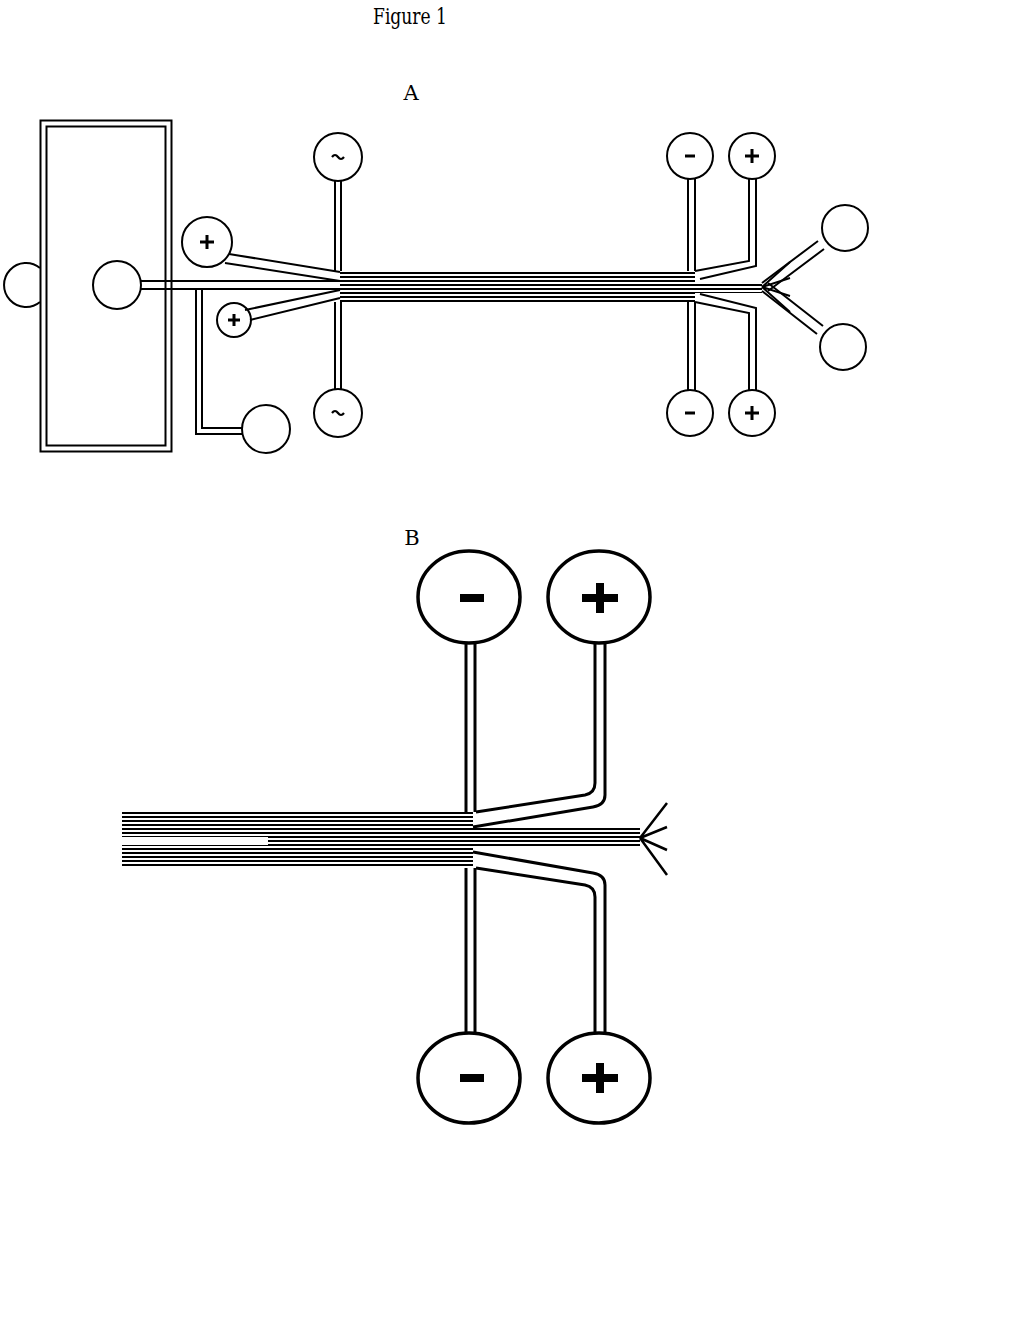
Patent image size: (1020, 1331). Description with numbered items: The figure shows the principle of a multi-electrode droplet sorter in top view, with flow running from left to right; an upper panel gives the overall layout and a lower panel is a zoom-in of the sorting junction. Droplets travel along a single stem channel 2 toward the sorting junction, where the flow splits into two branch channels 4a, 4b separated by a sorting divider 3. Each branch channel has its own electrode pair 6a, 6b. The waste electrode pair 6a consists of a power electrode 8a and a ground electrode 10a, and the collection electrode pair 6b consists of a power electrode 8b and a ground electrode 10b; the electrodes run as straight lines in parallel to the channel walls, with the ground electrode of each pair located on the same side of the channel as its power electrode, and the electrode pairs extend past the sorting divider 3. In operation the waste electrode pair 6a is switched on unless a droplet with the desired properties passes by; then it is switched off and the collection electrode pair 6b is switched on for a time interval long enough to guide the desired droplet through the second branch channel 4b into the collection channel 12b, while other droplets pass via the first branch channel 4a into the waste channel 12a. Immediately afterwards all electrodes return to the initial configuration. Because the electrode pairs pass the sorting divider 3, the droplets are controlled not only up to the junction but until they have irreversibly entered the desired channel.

The stem channel 2 is at (415, 285).
The sorting divider 3 is at (600, 287).
The first branch channel 4a is at (762, 280).
The second branch channel 4b is at (758, 292).
The waste electrode pair 6a is at (690, 125).
The collection electrode pair 6b is at (690, 448).
The power electrode 8a is at (750, 213).
The power electrode 8b is at (753, 373).
The ground electrode 10a is at (688, 232).
The ground electrode 10b is at (688, 360).
The waste channel 12a is at (850, 206).
The collection channel 12b is at (848, 358).